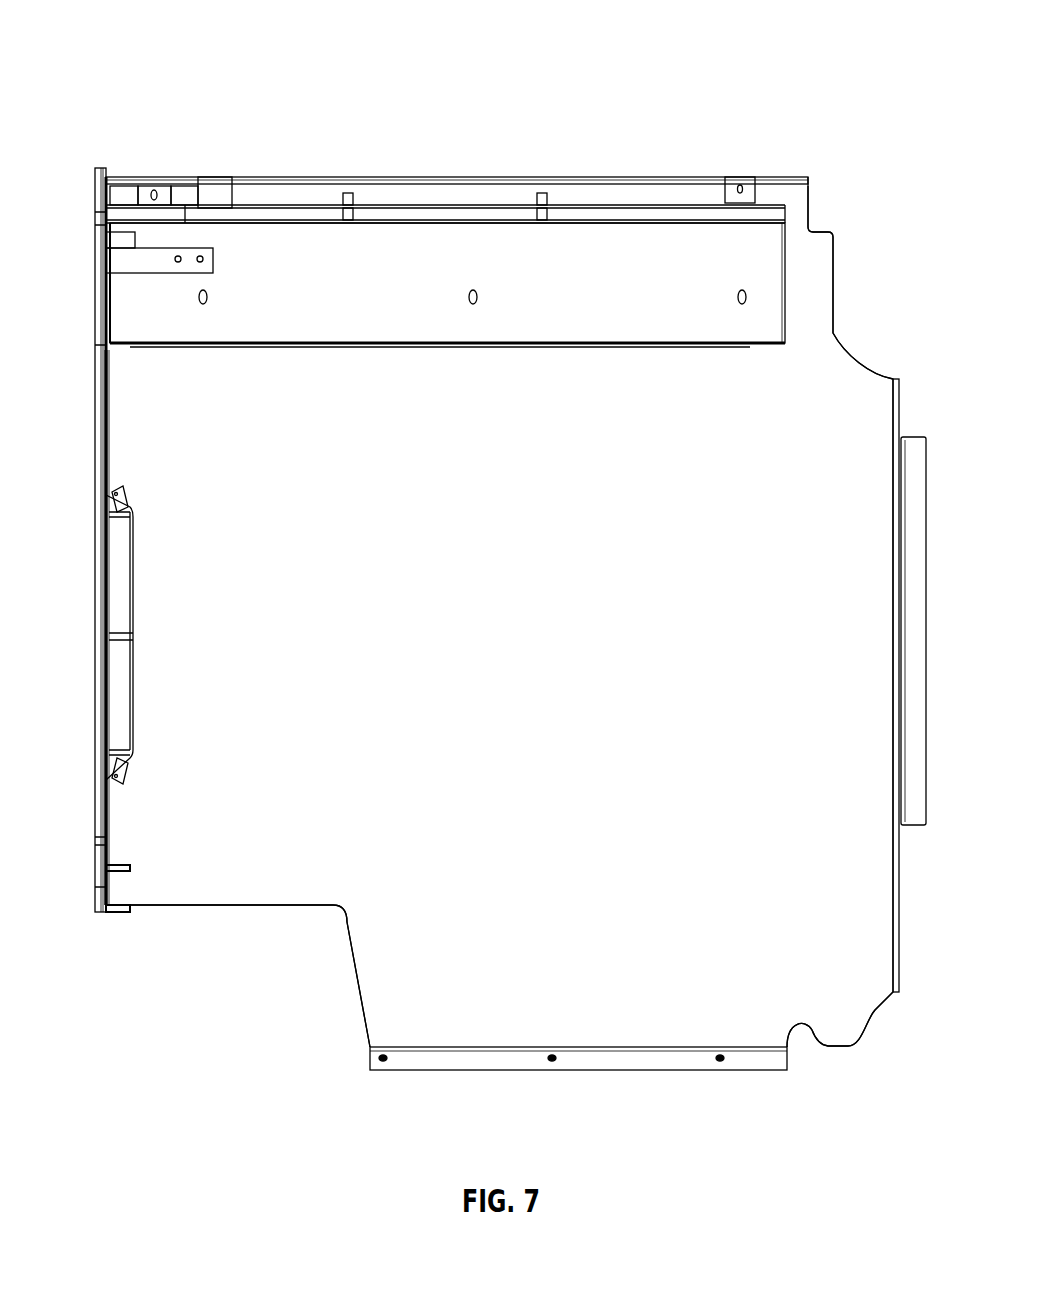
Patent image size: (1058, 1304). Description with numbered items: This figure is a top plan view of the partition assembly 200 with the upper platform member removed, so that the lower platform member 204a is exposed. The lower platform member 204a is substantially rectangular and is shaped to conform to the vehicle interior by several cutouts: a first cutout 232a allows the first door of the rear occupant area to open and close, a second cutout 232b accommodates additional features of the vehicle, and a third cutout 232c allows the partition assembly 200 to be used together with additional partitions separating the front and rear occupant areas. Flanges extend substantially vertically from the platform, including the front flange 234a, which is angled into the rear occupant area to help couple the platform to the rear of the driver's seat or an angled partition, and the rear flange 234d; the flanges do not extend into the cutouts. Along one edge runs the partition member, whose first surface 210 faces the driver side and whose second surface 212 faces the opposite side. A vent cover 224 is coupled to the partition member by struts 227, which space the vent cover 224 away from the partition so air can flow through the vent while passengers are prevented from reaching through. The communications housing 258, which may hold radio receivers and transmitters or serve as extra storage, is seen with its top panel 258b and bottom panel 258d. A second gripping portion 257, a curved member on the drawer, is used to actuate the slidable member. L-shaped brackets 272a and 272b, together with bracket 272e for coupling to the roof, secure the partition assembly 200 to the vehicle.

The partition assembly 200 is at (140, 52).
The lower platform member 204a is at (555, 642).
The first surface 210 is at (108, 388).
The second surface 212 is at (93, 431).
The vent cover 224 is at (133, 575).
The struts 227 is at (123, 507).
The first cutout 232a is at (873, 1007).
The second cutout 232b is at (843, 337).
The third cutout 232c is at (290, 906).
The front flange 234a is at (683, 1057).
The rear flange 234d is at (404, 177).
The second gripping portion 257 is at (912, 461).
The communications housing 258 is at (618, 255).
The top panel 258b is at (303, 263).
The bottom panel 258d is at (777, 213).
The L-shaped bracket 272a is at (130, 867).
The L-shaped bracket 272b is at (122, 914).
The roof bracket 272e is at (170, 257).